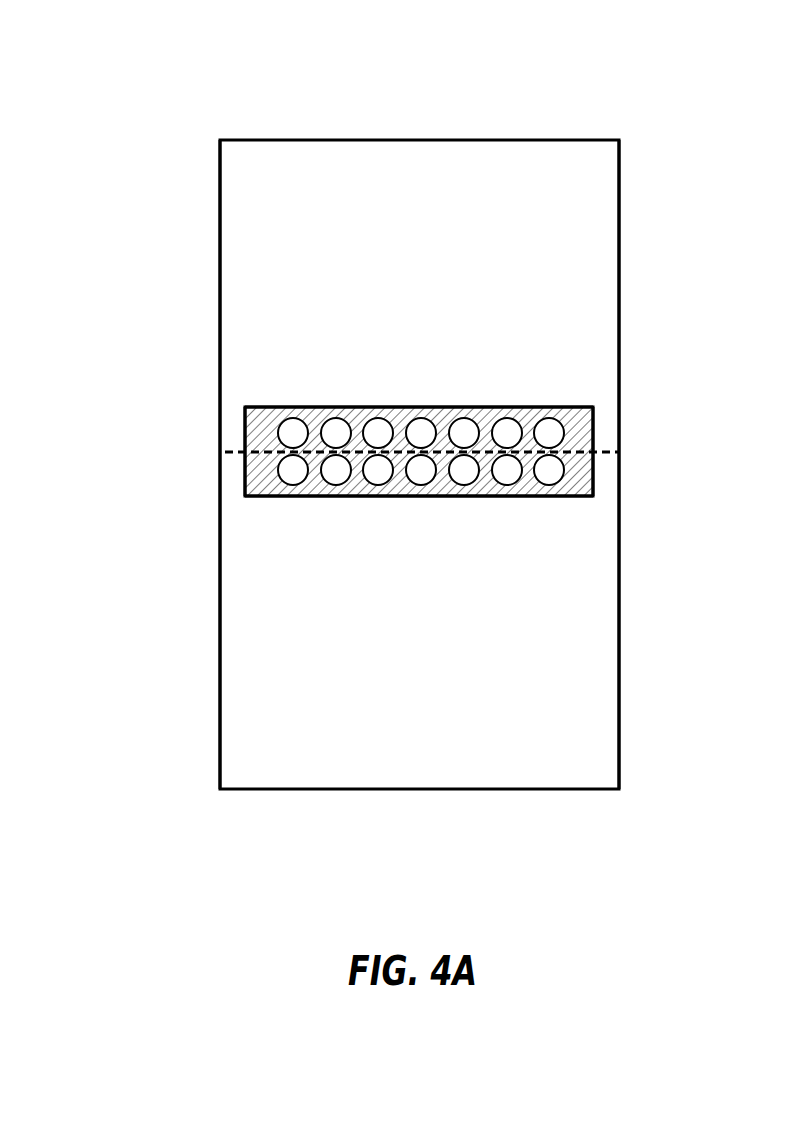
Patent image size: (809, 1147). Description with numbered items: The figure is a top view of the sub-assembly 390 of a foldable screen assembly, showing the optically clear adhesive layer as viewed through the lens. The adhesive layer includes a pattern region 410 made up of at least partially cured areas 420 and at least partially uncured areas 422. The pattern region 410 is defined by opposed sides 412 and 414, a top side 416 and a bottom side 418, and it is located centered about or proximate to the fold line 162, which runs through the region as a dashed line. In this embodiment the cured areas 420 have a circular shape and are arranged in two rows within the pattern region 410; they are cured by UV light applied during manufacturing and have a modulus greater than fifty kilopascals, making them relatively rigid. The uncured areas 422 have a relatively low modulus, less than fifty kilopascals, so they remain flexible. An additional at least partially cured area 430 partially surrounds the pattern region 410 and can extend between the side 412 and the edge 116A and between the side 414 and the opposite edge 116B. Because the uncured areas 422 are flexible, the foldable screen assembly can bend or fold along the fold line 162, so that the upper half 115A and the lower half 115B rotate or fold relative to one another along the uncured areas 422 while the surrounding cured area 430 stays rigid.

The sub-assembly 390 is at (524, 105).
The upper half 115A is at (573, 226).
The lower half 115B is at (573, 703).
The edge 116A is at (220, 332).
The opposite edge 116B is at (619, 315).
The at least partially cured area 430 is at (250, 272).
The pattern region 410 is at (320, 408).
The fold line 162 is at (238, 450).
The side 412 is at (245, 478).
The side 414 is at (593, 428).
The top side 416 is at (565, 408).
The bottom side 418 is at (543, 496).
The at least partially cured areas 420 is at (417, 427).
The at least partially uncured areas 422 is at (487, 408).